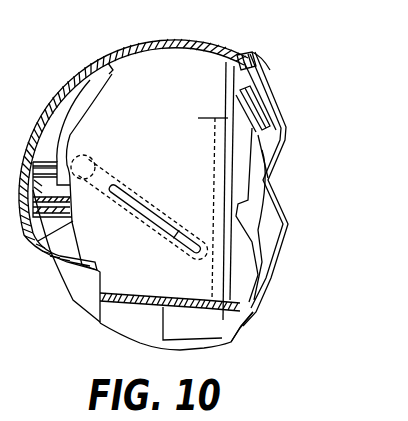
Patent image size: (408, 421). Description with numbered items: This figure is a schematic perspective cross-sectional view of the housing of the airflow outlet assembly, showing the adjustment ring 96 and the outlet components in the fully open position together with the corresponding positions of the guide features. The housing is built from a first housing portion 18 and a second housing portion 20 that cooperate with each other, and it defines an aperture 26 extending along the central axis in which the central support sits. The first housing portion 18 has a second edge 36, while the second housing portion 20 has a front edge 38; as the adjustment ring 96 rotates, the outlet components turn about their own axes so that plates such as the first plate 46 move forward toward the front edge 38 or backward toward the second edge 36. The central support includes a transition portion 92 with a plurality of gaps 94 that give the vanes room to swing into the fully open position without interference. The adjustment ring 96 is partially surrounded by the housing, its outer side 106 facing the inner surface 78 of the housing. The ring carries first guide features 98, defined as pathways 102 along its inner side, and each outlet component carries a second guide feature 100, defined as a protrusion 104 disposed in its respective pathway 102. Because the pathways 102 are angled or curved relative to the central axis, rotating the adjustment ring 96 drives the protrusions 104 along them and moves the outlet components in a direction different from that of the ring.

The first housing portion 18 is at (147, 50).
The second housing portion 20 is at (202, 54).
The aperture 26 is at (241, 209).
The second edge 36 is at (87, 68).
The front edge 38 is at (250, 58).
The first plate 46 is at (259, 110).
The inner surface 78 is at (143, 296).
The transition portion 92 is at (43, 237).
The gaps 94 is at (48, 156).
The adjustment ring 96 is at (283, 140).
The first guide features 98 is at (152, 192).
The second guide feature 100 is at (139, 179).
The pathways 102 is at (104, 176).
The protrusion 104 is at (103, 167).
The outer side 106 is at (240, 328).